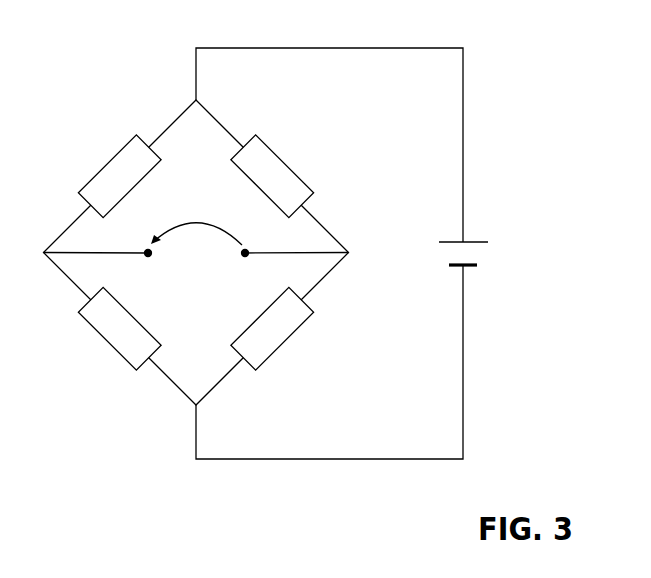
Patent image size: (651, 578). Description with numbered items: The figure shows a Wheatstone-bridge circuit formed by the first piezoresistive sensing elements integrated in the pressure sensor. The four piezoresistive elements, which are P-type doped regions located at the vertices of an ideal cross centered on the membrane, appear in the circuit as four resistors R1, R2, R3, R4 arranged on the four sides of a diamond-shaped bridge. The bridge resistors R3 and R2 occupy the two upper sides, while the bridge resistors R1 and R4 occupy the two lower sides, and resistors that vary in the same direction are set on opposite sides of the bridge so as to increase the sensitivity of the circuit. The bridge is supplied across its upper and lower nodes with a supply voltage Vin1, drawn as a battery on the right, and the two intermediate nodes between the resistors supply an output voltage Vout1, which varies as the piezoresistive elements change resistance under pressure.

The first bridge resistor R1 is at (119, 347).
The second bridge resistor R2 is at (272, 152).
The third bridge resistor R3 is at (119, 153).
The fourth bridge resistor R4 is at (272, 346).
The supply voltage Vin1 is at (488, 254).
The output voltage Vout1 is at (196, 216).